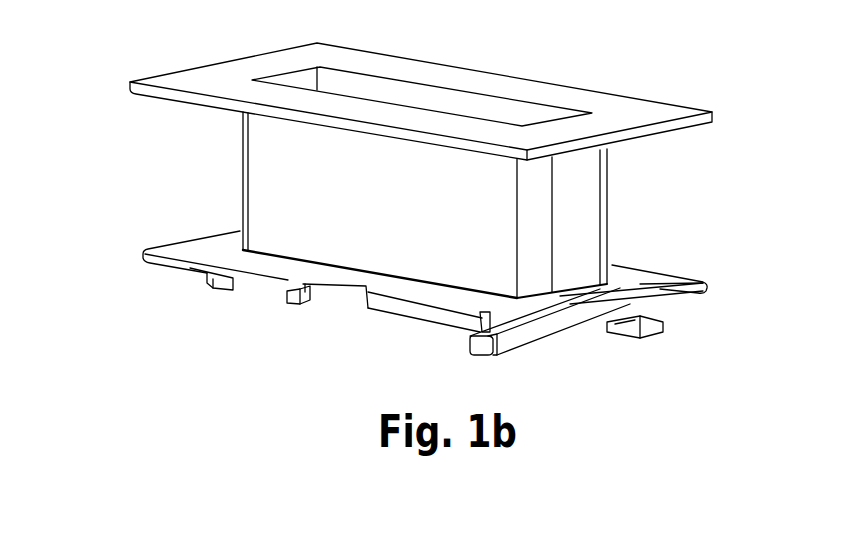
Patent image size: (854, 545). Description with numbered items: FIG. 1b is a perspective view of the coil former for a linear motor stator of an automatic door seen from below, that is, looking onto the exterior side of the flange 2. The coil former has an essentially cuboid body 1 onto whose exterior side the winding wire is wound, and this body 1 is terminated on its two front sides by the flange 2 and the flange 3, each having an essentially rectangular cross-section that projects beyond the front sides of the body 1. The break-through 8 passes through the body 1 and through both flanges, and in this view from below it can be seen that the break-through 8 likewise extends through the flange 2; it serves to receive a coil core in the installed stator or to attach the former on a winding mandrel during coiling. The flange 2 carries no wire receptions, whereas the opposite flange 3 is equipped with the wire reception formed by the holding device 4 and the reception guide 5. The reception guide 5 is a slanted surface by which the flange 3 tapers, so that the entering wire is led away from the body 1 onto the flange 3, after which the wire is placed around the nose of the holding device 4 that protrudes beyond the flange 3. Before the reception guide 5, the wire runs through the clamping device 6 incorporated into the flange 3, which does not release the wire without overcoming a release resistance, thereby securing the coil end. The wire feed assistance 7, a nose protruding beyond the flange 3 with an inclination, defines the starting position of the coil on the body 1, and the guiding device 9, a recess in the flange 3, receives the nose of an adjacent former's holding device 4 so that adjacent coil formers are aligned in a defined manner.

The body 1 is at (270, 168).
The flange 2 is at (430, 76).
The flange 3 is at (205, 248).
The wire reception 4 is at (297, 292).
The reception guide 5 is at (700, 297).
The clamping device 6 is at (663, 309).
The wire feed assistance 7 is at (527, 343).
The break-through 8 is at (335, 78).
The guiding device 9 is at (352, 306).